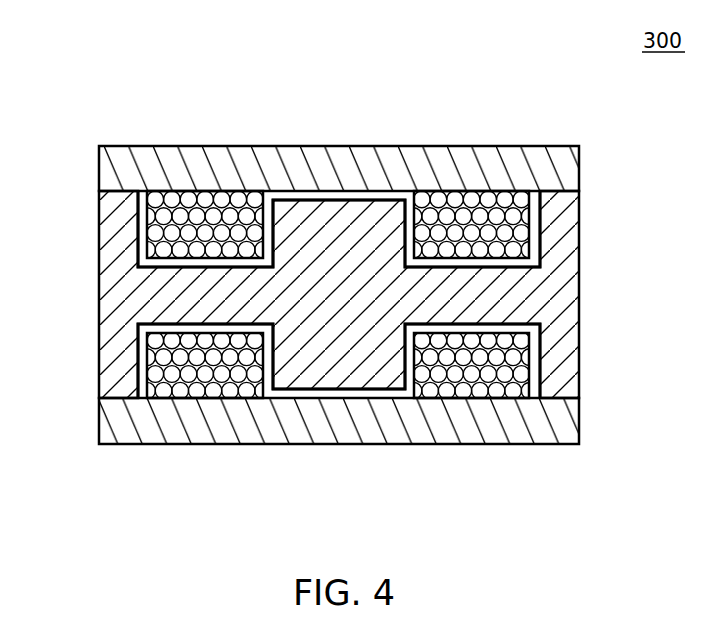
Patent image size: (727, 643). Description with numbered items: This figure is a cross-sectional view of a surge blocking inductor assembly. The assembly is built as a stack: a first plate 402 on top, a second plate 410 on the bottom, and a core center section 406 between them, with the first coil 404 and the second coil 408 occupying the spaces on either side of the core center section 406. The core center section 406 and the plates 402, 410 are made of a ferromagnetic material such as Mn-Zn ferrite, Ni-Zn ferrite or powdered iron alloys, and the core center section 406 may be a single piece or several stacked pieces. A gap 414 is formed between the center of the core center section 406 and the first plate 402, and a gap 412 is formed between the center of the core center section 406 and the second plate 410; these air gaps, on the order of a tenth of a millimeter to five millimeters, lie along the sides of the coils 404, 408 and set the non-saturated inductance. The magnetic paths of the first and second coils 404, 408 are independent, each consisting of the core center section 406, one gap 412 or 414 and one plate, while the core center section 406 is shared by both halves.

The first plate 402 is at (488, 146).
The first coil 404 is at (152, 215).
The core center section 406 is at (320, 347).
The second coil 408 is at (152, 376).
The second plate 410 is at (487, 445).
The gap 412 is at (382, 398).
The gap 414 is at (377, 192).